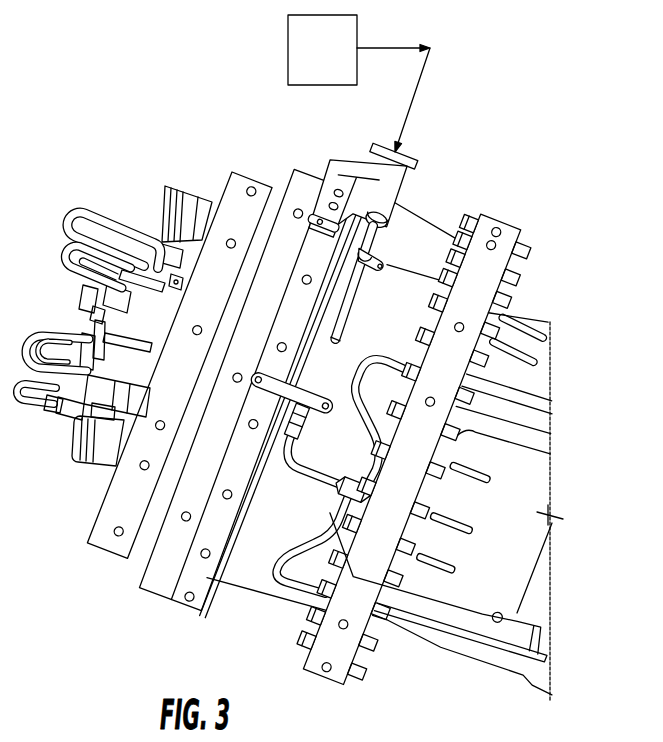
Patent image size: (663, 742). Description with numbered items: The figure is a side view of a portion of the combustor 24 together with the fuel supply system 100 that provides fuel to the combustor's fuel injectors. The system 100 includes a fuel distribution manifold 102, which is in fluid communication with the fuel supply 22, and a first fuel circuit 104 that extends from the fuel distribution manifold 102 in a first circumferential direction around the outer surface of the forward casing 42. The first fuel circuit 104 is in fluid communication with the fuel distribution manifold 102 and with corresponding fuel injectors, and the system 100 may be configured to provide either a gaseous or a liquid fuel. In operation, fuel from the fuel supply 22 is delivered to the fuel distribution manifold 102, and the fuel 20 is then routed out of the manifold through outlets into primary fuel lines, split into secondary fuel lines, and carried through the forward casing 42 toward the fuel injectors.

The fuel 20 is at (425, 78).
The fuel supply 22 is at (333, 64).
The combustor 24 is at (550, 215).
The forward casing 42 is at (177, 607).
The fuel supply system 100 is at (438, 130).
The fuel distribution manifold 102 is at (367, 183).
The first fuel circuit 104 is at (348, 304).